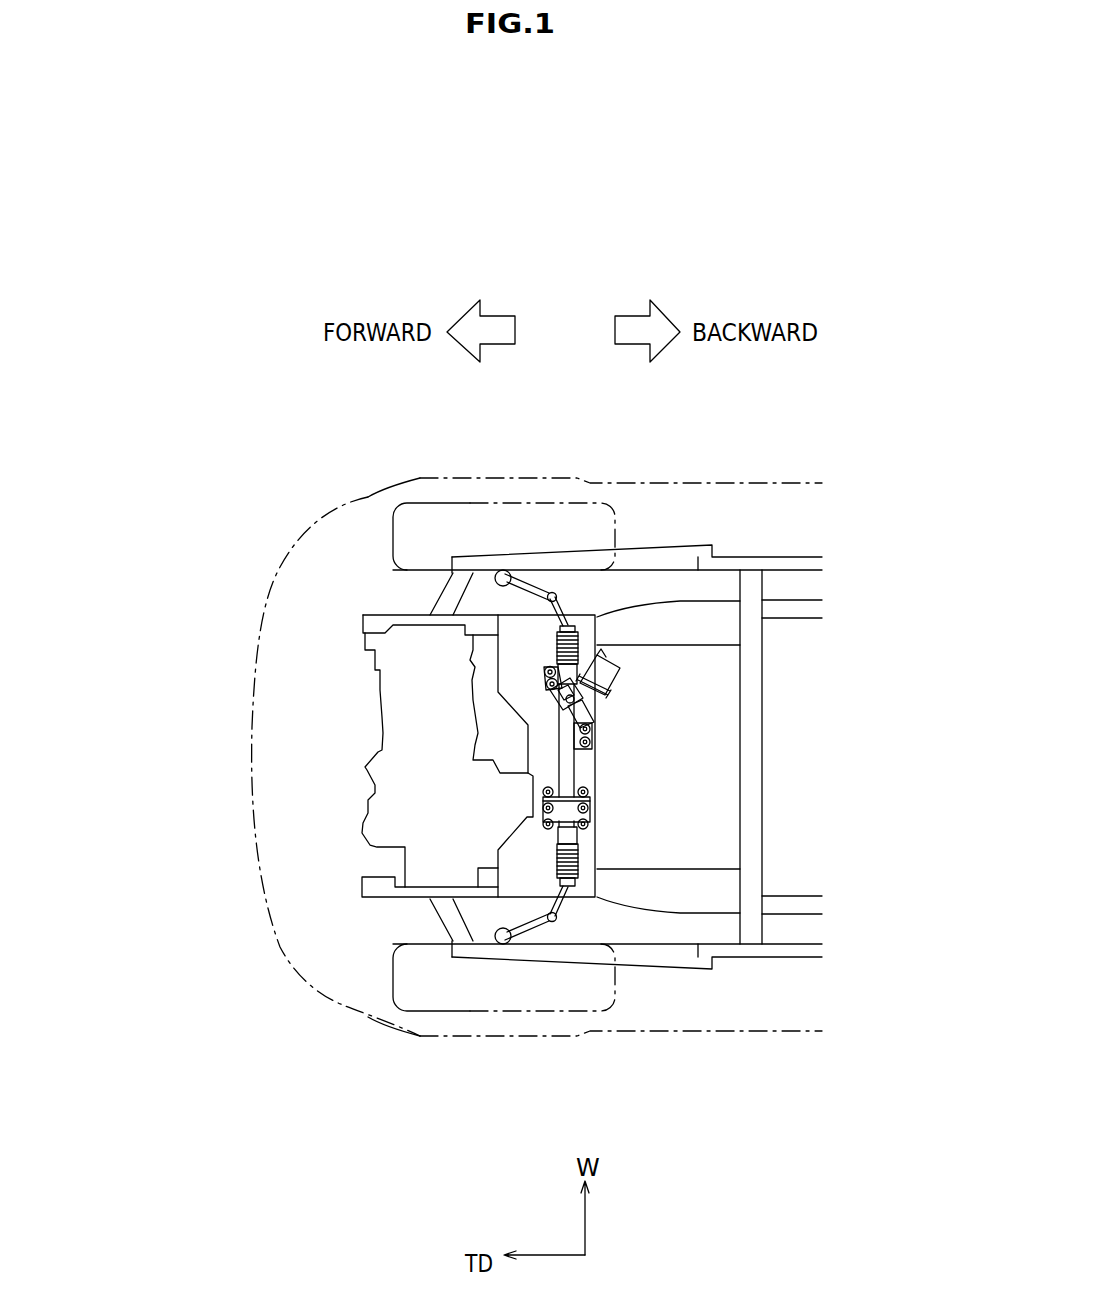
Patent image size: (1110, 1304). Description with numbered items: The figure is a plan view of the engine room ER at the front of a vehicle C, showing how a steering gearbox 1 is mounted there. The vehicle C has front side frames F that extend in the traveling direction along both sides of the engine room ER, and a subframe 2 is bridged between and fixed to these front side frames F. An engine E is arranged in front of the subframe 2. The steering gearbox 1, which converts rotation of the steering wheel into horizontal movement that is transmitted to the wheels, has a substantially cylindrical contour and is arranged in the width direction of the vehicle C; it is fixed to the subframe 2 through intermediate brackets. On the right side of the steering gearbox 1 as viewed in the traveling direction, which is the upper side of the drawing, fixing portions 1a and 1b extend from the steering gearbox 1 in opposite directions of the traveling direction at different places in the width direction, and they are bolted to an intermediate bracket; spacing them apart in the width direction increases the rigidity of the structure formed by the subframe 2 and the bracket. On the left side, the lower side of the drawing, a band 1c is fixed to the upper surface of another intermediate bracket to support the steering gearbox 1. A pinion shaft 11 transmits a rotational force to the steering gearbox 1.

The steering gearbox 1 is at (563, 775).
The fixing portion 1a is at (622, 664).
The fixing portion 1b is at (592, 727).
The band 1c is at (590, 808).
The pinion shaft 11 is at (583, 697).
The subframe 2 is at (528, 873).
The vehicle C is at (368, 497).
The engine E is at (407, 737).
The engine room ER is at (320, 637).
The front side frame F is at (677, 618).